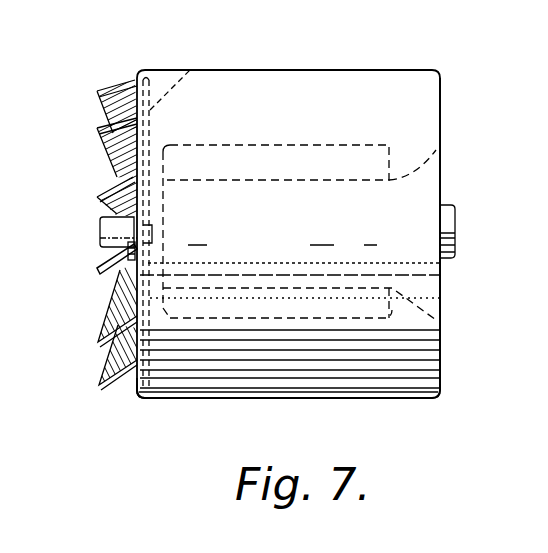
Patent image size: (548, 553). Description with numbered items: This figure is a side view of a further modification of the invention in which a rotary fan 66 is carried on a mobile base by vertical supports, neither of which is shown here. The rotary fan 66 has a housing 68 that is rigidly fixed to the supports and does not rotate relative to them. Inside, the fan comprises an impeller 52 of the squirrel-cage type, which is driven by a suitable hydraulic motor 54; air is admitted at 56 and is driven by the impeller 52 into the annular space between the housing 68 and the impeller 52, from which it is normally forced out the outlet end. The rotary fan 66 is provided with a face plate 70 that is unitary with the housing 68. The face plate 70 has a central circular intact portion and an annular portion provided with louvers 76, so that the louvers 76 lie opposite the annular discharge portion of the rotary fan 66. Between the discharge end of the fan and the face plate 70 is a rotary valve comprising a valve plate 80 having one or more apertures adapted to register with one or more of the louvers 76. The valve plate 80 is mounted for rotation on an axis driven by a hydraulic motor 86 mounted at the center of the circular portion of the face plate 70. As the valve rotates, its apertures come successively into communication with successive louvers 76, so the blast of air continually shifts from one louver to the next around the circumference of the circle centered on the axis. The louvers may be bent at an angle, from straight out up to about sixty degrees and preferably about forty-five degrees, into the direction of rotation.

The rotary fan 66 is at (406, 44).
The housing 68 is at (245, 392).
The valve plate 80 is at (193, 68).
The impeller 52 is at (331, 147).
The air inlet 56 is at (448, 179).
The hydraulic motor 54 is at (454, 243).
The hydraulic motor 86 is at (100, 241).
The louvers 76 is at (100, 101).
The face plate 70 is at (123, 404).